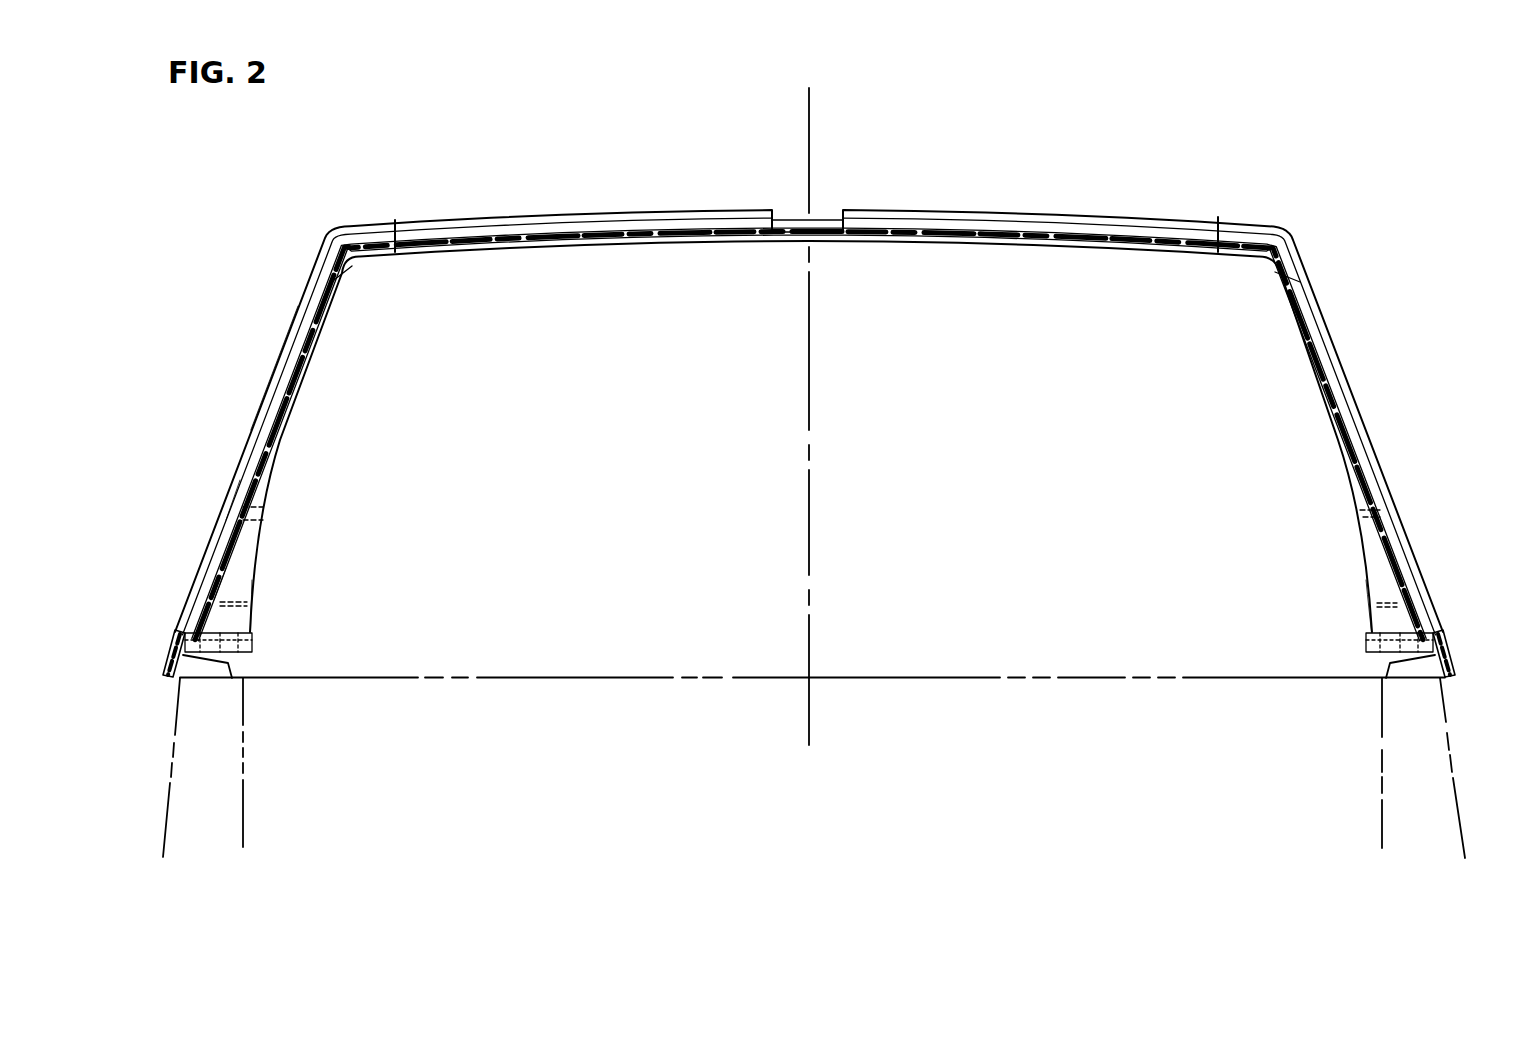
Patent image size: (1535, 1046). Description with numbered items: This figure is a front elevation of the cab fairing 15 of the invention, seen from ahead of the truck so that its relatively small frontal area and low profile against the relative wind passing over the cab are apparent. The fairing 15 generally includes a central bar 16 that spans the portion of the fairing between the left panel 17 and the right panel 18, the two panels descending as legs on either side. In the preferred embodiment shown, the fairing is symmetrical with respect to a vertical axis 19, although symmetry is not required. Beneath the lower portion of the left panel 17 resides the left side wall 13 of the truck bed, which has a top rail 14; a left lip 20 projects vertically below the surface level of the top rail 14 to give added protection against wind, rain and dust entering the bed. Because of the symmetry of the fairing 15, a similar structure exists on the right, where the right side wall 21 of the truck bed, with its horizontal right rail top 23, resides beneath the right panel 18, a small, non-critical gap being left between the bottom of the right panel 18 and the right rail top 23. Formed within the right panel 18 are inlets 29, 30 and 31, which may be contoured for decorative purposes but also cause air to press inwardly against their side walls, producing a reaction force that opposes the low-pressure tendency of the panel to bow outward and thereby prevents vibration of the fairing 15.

The left side wall 13 is at (1398, 718).
The top rail 14 is at (1386, 676).
The cab fairing 15 is at (882, 178).
The central bar 16 is at (818, 214).
The left panel 17 is at (1380, 578).
The right panel 18 is at (240, 614).
The vertical axis 19 is at (810, 362).
The left lip 20 is at (1452, 655).
The right side wall 21 is at (188, 707).
The right rail top 23 is at (233, 676).
The inlet 29 is at (290, 363).
The inlet 30 is at (250, 465).
The inlet 31 is at (228, 566).